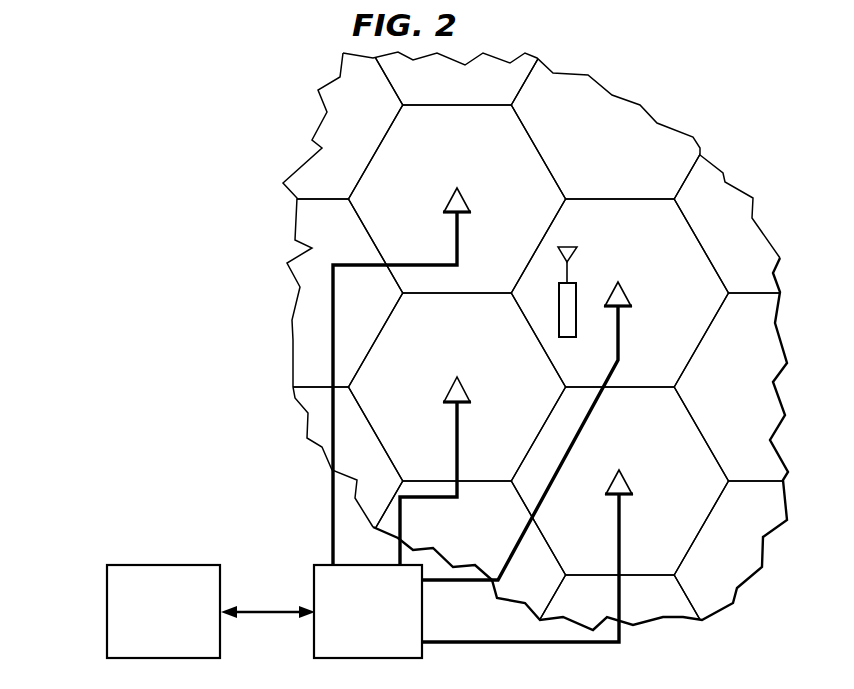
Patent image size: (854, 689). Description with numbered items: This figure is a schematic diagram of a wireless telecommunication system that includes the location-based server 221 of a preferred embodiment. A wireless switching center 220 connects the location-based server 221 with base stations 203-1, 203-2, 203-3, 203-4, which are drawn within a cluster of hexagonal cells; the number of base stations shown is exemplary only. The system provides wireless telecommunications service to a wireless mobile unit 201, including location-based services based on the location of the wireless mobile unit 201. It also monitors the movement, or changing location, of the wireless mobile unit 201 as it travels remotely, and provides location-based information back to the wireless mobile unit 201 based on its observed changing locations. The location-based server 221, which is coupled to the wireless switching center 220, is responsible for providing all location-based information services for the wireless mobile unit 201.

The wireless mobile unit 201 is at (578, 254).
The base station 203-1 is at (459, 228).
The base station 203-2 is at (459, 425).
The base station 203-3 is at (621, 327).
The base station 203-4 is at (622, 517).
The wireless switching center 220 is at (314, 647).
The location-based server 221 is at (106, 583).